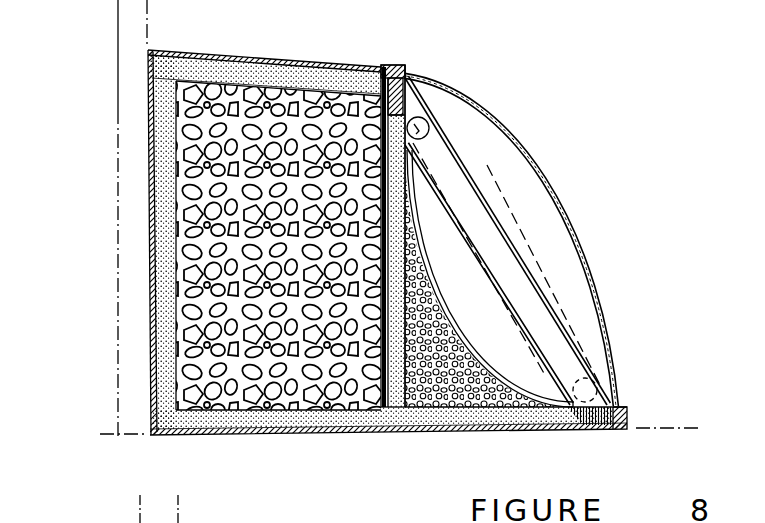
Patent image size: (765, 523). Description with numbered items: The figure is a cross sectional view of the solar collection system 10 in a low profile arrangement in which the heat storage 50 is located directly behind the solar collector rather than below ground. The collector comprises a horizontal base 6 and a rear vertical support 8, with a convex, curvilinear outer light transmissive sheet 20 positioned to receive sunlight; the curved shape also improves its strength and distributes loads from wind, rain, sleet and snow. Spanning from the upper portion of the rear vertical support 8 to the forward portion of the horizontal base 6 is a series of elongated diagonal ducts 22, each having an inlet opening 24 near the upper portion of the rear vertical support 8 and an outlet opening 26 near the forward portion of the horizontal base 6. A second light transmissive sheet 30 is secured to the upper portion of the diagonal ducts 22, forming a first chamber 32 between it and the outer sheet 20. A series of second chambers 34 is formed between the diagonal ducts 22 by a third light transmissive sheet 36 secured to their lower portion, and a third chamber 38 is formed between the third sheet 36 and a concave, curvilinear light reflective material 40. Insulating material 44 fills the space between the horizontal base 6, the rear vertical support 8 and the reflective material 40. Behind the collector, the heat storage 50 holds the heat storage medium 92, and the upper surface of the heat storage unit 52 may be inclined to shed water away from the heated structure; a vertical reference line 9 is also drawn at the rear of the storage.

The horizontal base 6 is at (482, 432).
The rear vertical support 8 is at (345, 70).
The reference line 9 is at (118, 18).
The solar collection system 10 is at (552, 165).
The outer light transmissive sheet 20 is at (472, 135).
The diagonal ducts 22 is at (556, 345).
The inlet opening 24 is at (423, 118).
The outlet opening 26 is at (597, 383).
The second light transmissive sheet 30 is at (475, 217).
The first chamber 32 is at (472, 163).
The second chambers 34 is at (495, 183).
The third light transmissive sheet 36 is at (473, 243).
The third chamber 38 is at (470, 286).
The light reflective material 40 is at (461, 320).
The insulating material 44 is at (447, 370).
The heat storage 50 is at (144, 253).
The upper surface of the heat storage unit 52 is at (283, 62).
The heat storage medium 92 is at (156, 146).